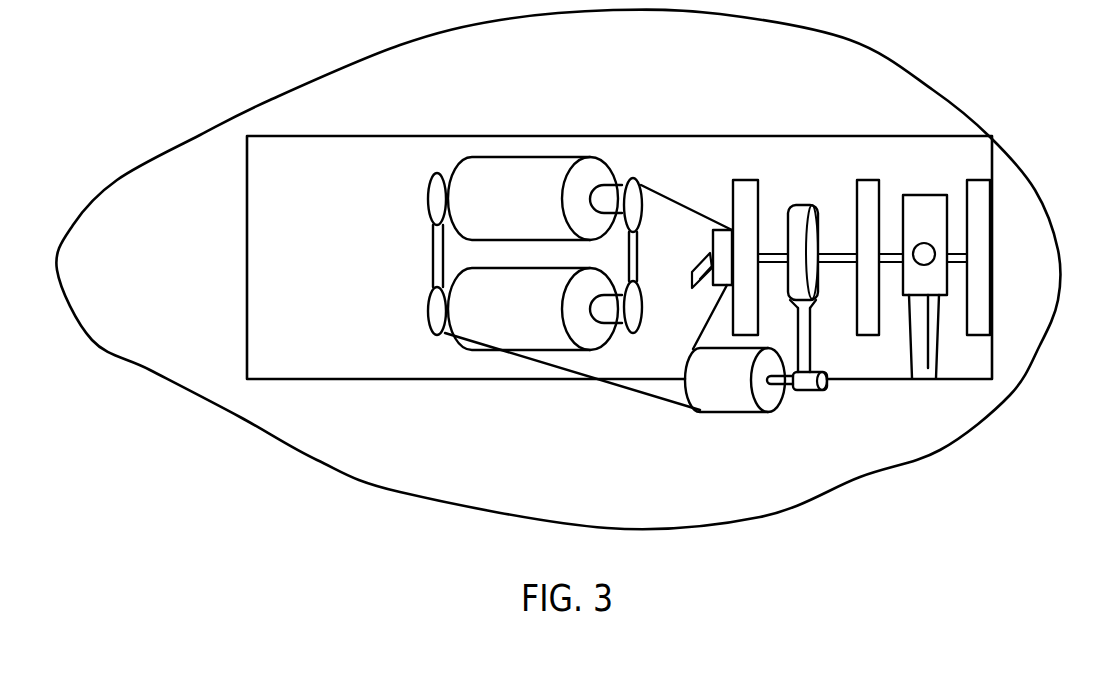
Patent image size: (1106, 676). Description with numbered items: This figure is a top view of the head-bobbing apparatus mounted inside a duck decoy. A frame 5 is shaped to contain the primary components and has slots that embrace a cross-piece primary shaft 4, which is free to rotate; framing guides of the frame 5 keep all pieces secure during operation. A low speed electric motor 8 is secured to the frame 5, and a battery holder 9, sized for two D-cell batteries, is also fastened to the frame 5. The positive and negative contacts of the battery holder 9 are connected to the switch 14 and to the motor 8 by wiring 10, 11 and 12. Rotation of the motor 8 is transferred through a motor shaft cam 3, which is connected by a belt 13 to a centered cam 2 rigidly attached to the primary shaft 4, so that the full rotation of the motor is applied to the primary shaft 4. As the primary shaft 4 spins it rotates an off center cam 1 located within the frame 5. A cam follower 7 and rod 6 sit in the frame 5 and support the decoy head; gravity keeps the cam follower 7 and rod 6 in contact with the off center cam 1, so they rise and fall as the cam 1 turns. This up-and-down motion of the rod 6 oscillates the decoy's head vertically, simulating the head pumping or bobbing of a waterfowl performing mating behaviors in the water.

The off center cam 1 is at (923, 358).
The centered cam 2 is at (803, 205).
The motor shaft cam 3 is at (810, 392).
The primary shaft 4 is at (838, 252).
The frame 5 is at (992, 262).
The rod 6 is at (924, 254).
The cam follower 7 is at (915, 195).
The motor 8 is at (710, 392).
The battery holder 9 is at (505, 319).
The wiring 10 is at (681, 208).
The wiring 11 is at (690, 348).
The wiring 12 is at (621, 388).
The belt 13 is at (810, 352).
The switch 14 is at (713, 240).